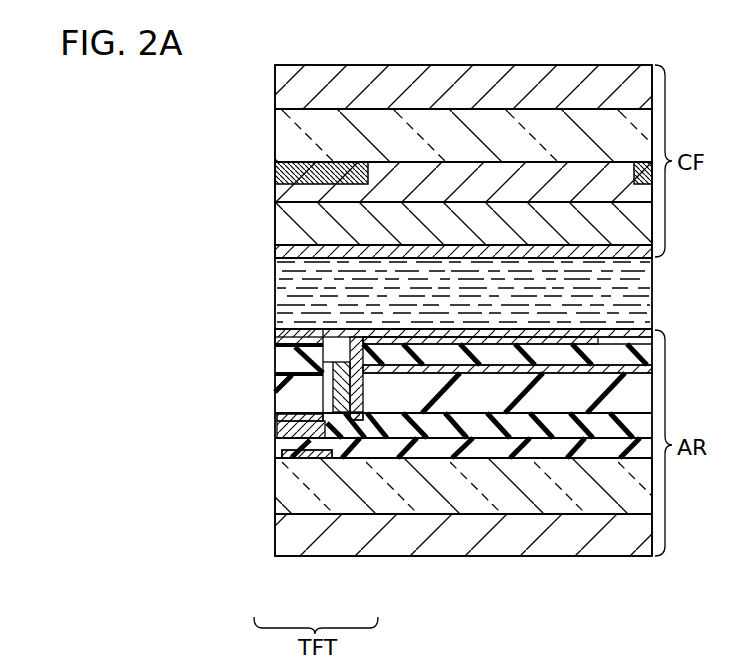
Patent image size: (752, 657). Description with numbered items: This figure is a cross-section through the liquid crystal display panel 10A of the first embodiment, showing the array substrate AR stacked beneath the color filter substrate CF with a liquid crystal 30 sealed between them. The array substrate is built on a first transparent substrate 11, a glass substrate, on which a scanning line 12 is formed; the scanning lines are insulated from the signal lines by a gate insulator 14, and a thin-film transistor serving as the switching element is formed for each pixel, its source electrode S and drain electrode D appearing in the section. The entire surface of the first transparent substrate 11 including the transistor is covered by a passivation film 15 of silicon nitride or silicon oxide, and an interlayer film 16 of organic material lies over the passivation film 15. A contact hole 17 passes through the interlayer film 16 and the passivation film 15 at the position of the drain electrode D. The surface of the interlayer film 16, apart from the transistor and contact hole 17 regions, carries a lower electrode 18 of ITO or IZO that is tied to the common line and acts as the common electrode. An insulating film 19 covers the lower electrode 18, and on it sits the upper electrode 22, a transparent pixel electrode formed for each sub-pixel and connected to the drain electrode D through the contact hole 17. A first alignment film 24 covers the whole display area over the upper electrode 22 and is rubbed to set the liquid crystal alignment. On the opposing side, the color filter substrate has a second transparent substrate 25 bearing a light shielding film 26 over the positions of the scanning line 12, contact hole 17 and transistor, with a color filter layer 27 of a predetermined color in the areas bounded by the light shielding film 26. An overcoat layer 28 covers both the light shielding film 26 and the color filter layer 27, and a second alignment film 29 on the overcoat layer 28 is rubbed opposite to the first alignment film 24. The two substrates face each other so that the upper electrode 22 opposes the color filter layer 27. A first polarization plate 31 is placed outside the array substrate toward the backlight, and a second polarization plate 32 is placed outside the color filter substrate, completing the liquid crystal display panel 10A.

The liquid crystal display panel 10A is at (151, 99).
The first transparent substrate 11 is at (615, 485).
The scanning line 12 is at (308, 458).
The gate insulator 14 is at (583, 452).
The passivation film 15 is at (555, 428).
The interlayer film 16 is at (293, 398).
The contact hole 17 is at (330, 368).
The lower electrode 18 is at (519, 372).
The insulating film 19 is at (446, 350).
The upper electrode 22 is at (598, 341).
The first alignment film 24 is at (277, 335).
The second transparent substrate 25 is at (587, 124).
The light shielding film 26 is at (318, 172).
The color filter layer 27 is at (498, 178).
The overcoat layer 28 is at (290, 225).
The second alignment film 29 is at (284, 251).
The liquid crystal 30 is at (292, 290).
The first polarization plate 31 is at (470, 548).
The second polarization plate 32 is at (390, 86).
The source electrode S is at (283, 422).
The drain electrode D is at (352, 430).